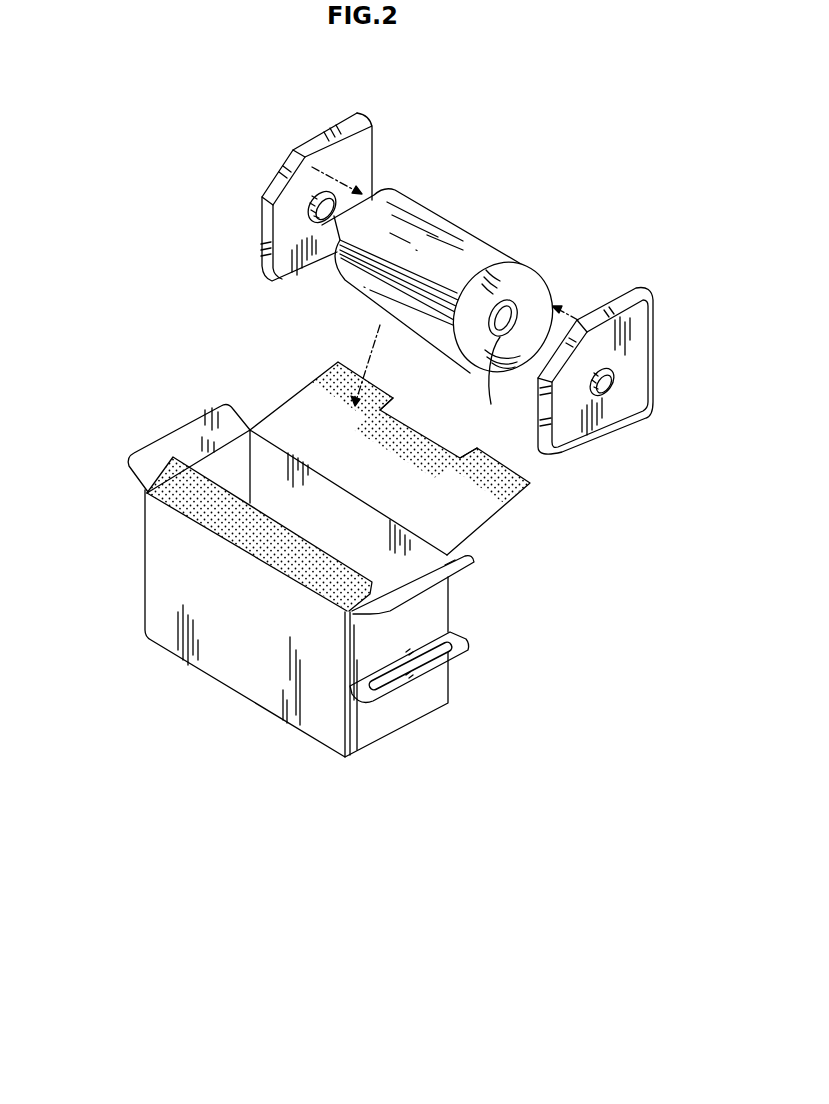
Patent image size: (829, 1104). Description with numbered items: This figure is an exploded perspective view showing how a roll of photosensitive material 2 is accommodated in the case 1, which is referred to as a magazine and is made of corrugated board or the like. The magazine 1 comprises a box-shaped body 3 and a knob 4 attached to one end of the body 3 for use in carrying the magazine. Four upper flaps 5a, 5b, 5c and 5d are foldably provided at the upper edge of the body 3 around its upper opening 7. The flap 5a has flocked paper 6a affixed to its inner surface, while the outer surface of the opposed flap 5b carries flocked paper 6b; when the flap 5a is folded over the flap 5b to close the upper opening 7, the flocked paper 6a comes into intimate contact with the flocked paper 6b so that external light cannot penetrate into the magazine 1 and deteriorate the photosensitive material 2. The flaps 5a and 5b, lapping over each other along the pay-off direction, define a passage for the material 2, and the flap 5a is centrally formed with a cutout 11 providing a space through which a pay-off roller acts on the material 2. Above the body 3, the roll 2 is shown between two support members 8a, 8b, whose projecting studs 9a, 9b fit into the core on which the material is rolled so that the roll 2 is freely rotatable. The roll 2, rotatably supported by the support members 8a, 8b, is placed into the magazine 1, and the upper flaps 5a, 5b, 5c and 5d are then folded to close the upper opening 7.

The case 1 is at (126, 588).
The roll of photosensitive material 2 is at (533, 278).
The box-shaped body 3 is at (220, 653).
The knob 4 is at (468, 647).
The upper flap 5a is at (478, 513).
The upper flap 5b is at (257, 547).
The upper flap 5c is at (465, 567).
The upper flap 5d is at (207, 423).
The flocked paper 6a is at (517, 470).
The flocked paper 6b is at (163, 478).
The upper opening 7 is at (270, 463).
The support member 8a is at (362, 147).
The support member 8b is at (640, 343).
The projecting stud 9a is at (319, 218).
The projecting stud 9b is at (612, 383).
The cutout 11 is at (401, 423).